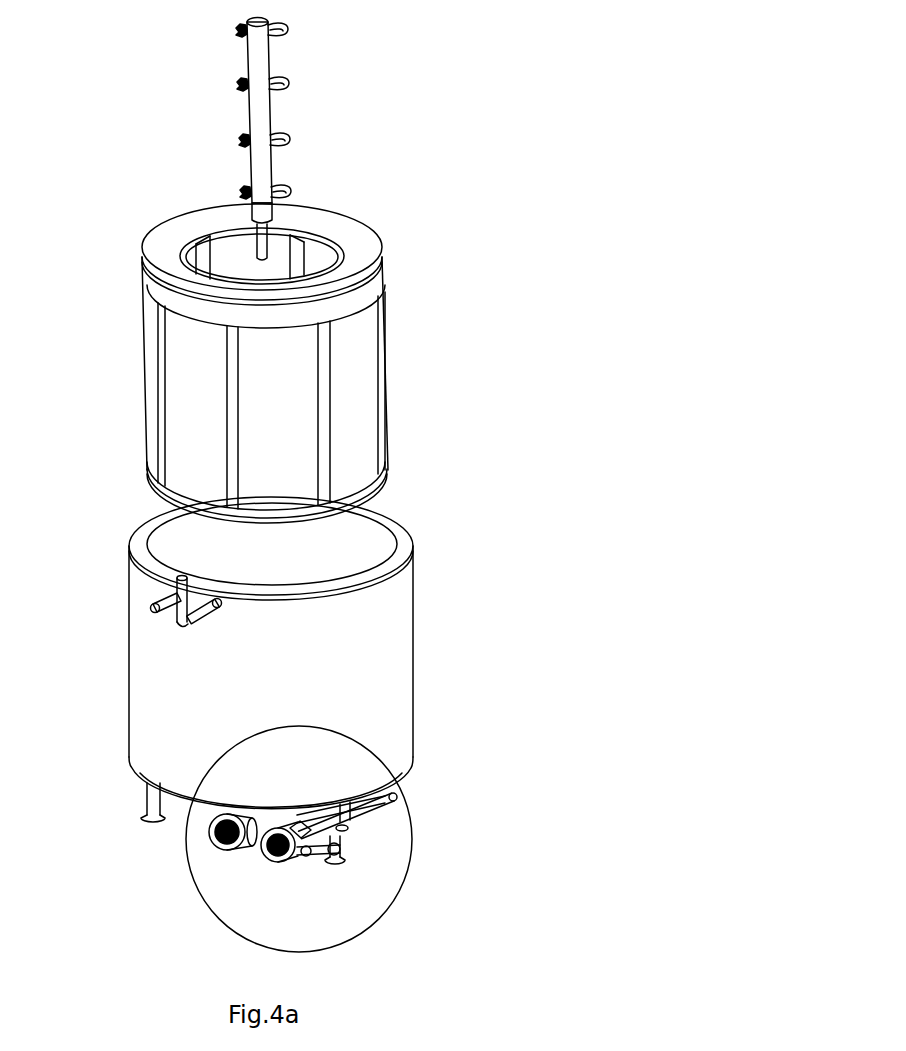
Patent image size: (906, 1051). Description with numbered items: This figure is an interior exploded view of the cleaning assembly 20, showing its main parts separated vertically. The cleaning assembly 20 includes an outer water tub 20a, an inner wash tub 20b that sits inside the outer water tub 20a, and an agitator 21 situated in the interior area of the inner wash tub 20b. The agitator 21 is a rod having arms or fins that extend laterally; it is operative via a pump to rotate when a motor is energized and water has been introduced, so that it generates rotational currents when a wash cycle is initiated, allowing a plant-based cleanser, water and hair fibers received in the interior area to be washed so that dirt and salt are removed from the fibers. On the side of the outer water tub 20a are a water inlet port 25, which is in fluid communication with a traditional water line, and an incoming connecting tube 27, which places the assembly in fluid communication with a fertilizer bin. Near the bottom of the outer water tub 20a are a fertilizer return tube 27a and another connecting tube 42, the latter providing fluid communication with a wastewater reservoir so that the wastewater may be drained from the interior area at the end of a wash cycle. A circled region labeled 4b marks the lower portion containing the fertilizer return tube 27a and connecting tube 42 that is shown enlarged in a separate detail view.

The cleaning assembly 20 is at (486, 108).
The outer water tub 20a is at (462, 589).
The inner wash tub 20b is at (441, 336).
The agitator 21 is at (262, 112).
The water inlet port 25 is at (208, 620).
The incoming connecting tube 27 is at (160, 597).
The fertilizer return tube 27a is at (267, 860).
The connecting tube 42 is at (373, 808).
The detail region of Fig. 4b is at (363, 839).